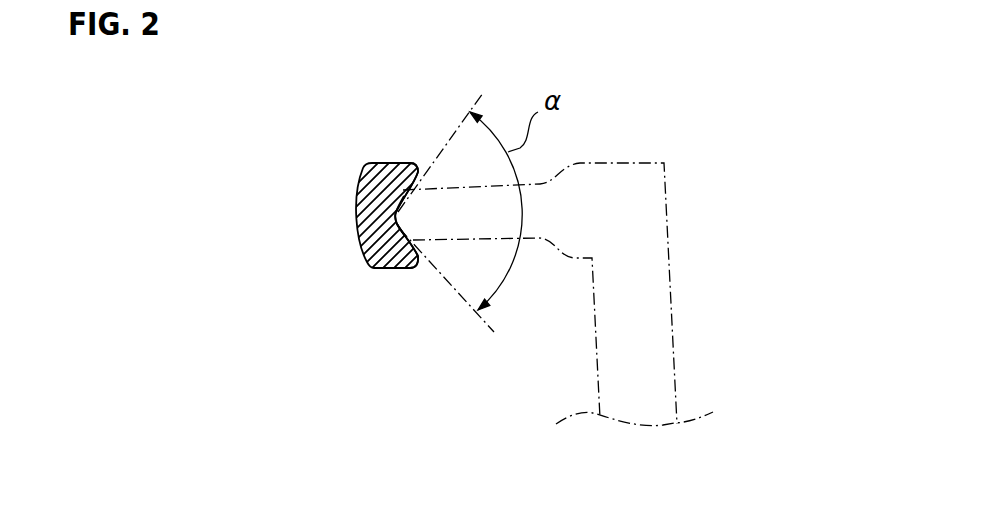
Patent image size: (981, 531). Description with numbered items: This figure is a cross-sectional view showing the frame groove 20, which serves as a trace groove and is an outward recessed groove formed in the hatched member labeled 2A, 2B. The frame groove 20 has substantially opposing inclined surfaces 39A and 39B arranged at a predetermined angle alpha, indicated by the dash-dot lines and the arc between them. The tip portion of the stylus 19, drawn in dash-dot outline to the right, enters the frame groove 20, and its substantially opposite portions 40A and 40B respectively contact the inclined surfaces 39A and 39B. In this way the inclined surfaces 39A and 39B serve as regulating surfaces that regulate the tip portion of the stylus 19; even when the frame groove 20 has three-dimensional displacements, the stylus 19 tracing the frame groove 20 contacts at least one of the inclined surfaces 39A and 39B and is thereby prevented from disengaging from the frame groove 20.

The contact member 2A is at (374, 231).
The contact member 2B is at (355, 222).
The stylus 19 is at (628, 163).
The frame groove 20 is at (396, 217).
The inclined surface 39A is at (426, 172).
The inclined surface 39B is at (414, 251).
The opposite portion of the tip portion of the stylus 40A is at (393, 163).
The opposite portion of the tip portion of the stylus 40B is at (372, 268).